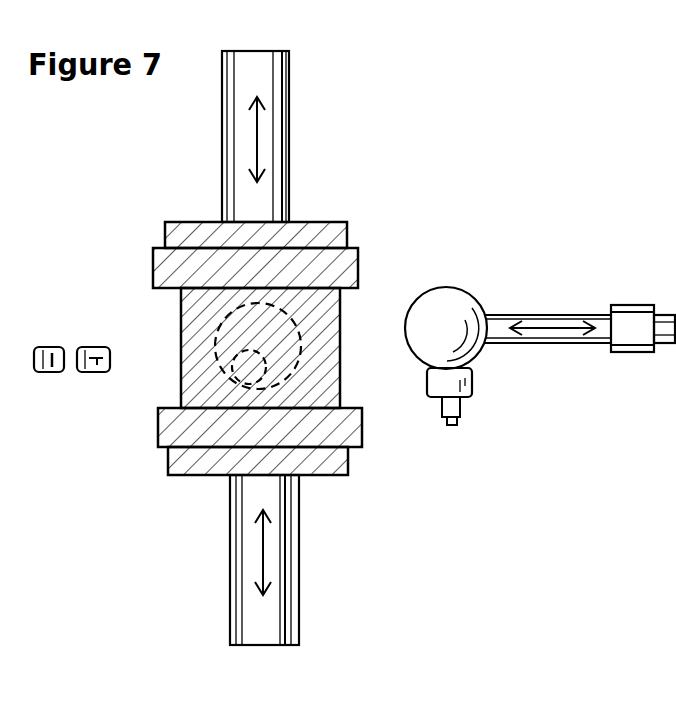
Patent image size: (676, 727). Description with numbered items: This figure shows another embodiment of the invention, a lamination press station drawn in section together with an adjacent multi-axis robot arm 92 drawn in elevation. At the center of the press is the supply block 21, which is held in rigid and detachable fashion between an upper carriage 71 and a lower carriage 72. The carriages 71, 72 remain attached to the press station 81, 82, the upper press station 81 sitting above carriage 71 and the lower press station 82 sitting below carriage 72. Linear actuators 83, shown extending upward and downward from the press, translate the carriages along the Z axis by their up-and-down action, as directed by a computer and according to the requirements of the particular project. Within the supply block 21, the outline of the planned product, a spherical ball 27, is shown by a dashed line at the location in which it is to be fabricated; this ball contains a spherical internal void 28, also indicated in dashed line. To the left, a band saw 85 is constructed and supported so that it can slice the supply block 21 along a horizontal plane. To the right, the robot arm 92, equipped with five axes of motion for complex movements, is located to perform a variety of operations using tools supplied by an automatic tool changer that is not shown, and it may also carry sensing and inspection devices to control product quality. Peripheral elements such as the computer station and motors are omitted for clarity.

The supply block 21 is at (180, 309).
The spherical ball 27 is at (217, 333).
The spherical internal void 28 is at (235, 373).
The carriage 71 is at (348, 268).
The carriage 72 is at (357, 437).
The press station 81 is at (338, 238).
The press station 82 is at (340, 462).
The linear actuator 83 is at (268, 155).
The band saw 85 is at (98, 372).
The robot arm 92 is at (535, 323).